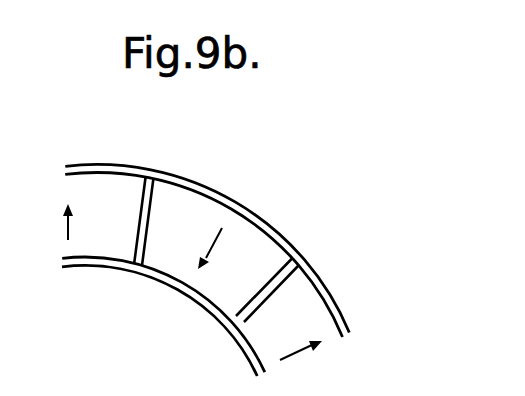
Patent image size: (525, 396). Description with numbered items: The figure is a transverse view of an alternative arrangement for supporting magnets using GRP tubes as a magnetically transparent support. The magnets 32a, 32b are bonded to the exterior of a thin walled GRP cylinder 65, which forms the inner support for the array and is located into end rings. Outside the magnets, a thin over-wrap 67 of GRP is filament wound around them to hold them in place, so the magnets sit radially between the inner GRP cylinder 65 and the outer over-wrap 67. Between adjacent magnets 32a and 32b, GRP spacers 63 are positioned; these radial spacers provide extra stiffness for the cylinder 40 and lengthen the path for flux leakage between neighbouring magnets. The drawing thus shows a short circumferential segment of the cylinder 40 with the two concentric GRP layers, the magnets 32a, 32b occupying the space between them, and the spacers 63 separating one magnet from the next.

The cylinder 40 is at (100, 134).
The GRP spacers 63 is at (152, 182).
The thin walled GRP cylinder 65 is at (150, 277).
The thin over-wrap 67 is at (250, 213).
The magnet 32a is at (203, 239).
The magnet 32b is at (127, 232).